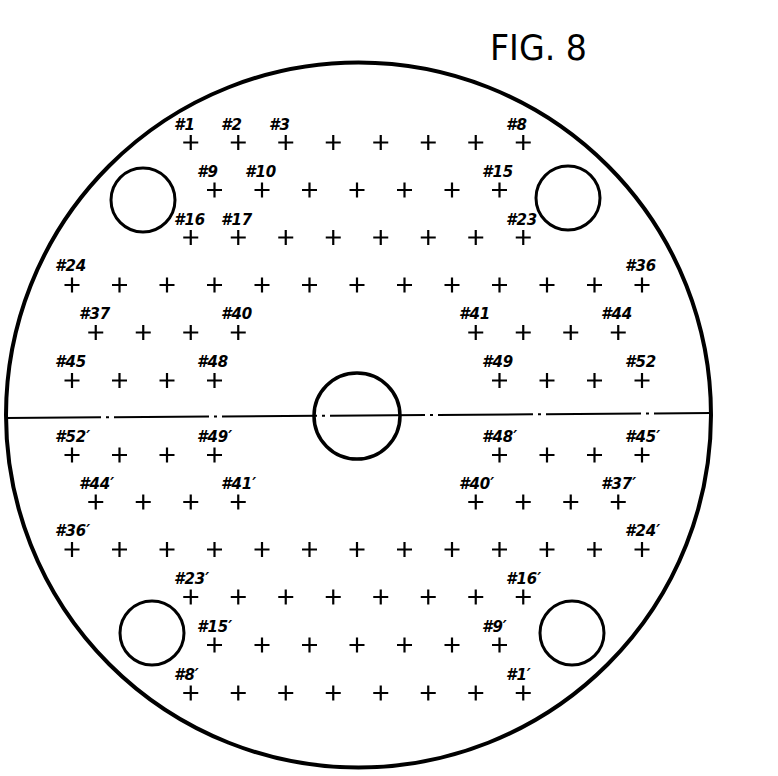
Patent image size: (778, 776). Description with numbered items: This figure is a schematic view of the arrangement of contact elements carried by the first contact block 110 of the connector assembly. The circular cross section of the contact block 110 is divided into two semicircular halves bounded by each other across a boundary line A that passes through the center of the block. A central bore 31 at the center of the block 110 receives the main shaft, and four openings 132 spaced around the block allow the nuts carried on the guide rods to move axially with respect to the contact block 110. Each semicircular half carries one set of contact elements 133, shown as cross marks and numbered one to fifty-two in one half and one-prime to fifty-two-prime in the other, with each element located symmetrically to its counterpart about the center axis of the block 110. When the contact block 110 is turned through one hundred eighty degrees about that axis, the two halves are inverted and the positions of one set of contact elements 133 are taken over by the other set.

The first contact block 110 is at (510, 737).
The central hole 31 is at (386, 447).
The openings 132 is at (138, 169).
The contact elements 133 is at (333, 141).
The boundary line A is at (29, 425).